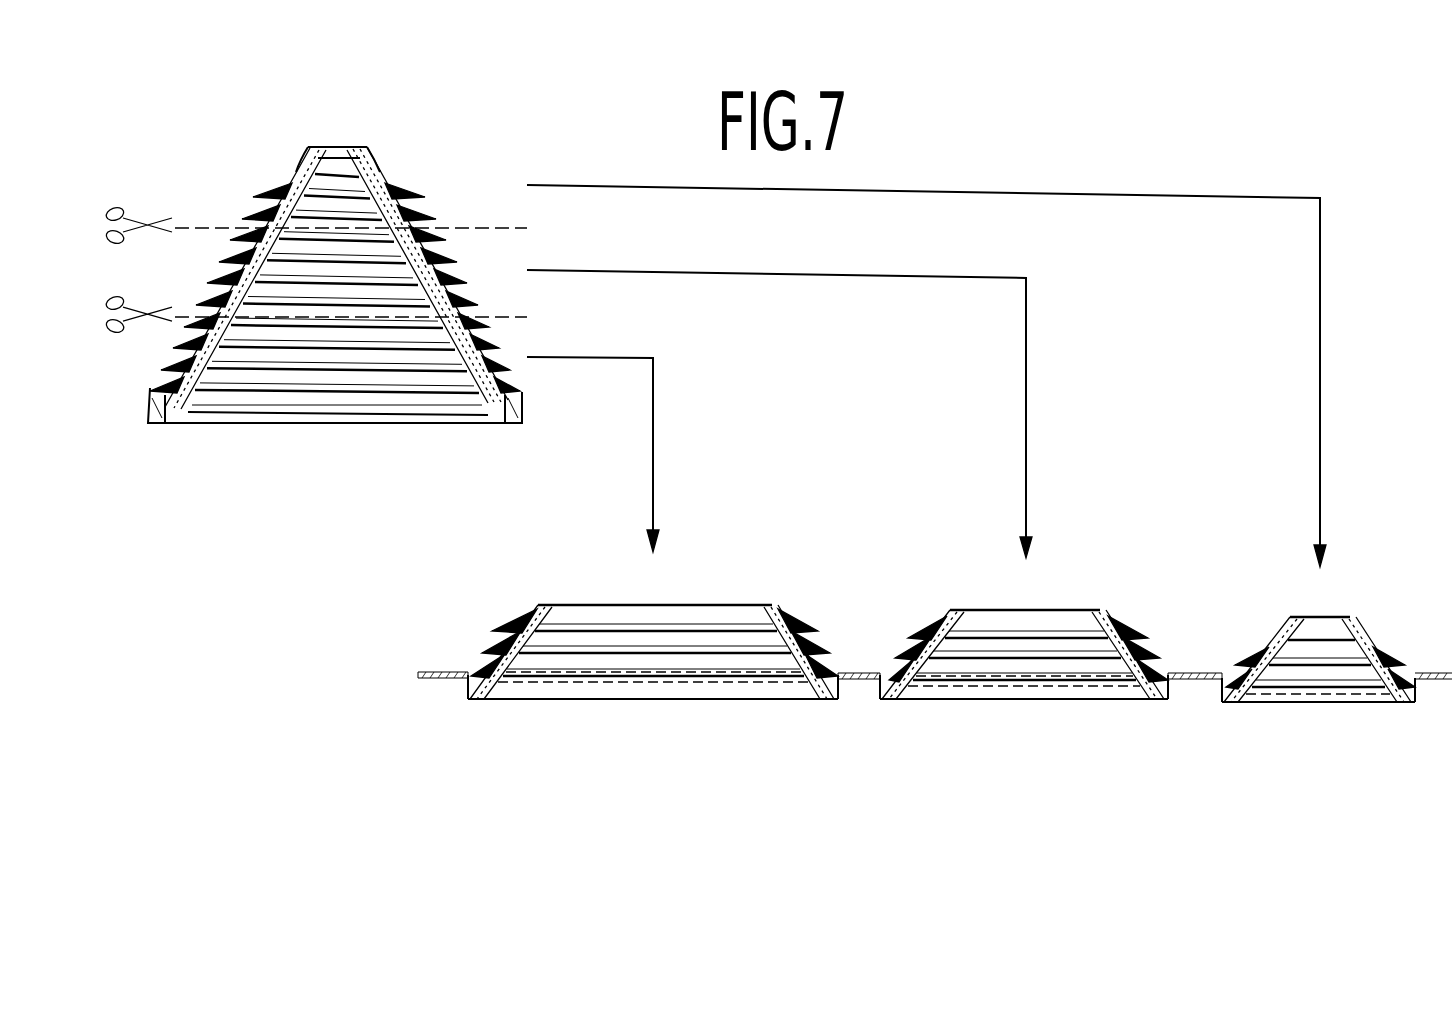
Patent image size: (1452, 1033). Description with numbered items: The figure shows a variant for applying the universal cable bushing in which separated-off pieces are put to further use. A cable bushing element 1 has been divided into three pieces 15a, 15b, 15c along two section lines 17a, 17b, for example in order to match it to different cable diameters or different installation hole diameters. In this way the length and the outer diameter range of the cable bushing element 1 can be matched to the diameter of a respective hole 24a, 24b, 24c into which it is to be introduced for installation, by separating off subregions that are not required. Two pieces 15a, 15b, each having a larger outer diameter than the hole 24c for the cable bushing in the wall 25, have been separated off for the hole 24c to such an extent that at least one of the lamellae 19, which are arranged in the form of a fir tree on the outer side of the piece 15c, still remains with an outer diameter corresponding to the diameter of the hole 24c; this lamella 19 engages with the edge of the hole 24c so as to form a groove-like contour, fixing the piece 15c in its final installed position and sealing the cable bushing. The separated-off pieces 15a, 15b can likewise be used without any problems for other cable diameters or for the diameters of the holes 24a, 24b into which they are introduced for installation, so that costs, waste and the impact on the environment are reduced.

The cable bushing element 1 is at (254, 166).
The section line 17a is at (315, 220).
The section line 17b is at (337, 322).
The piece of the cable bushing element 15a is at (482, 623).
The piece of the cable bushing element 15b is at (896, 634).
The piece of the cable bushing element 15c is at (1252, 630).
The hole 24a is at (604, 701).
The hole 24b is at (1001, 702).
The hole 24c is at (1294, 708).
The wall 25 is at (442, 672).
The lamella 19 is at (1388, 662).